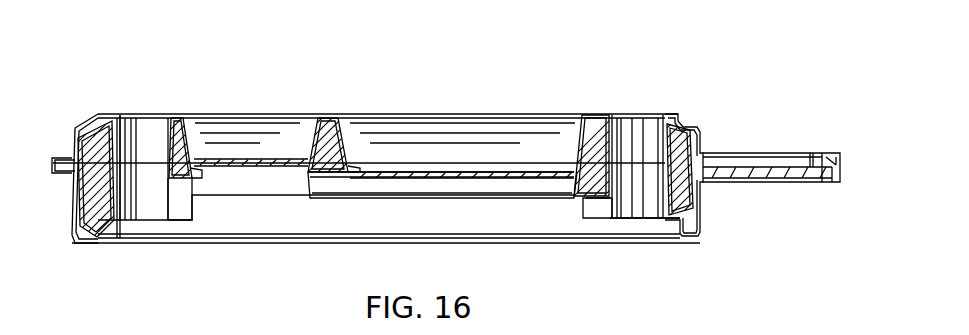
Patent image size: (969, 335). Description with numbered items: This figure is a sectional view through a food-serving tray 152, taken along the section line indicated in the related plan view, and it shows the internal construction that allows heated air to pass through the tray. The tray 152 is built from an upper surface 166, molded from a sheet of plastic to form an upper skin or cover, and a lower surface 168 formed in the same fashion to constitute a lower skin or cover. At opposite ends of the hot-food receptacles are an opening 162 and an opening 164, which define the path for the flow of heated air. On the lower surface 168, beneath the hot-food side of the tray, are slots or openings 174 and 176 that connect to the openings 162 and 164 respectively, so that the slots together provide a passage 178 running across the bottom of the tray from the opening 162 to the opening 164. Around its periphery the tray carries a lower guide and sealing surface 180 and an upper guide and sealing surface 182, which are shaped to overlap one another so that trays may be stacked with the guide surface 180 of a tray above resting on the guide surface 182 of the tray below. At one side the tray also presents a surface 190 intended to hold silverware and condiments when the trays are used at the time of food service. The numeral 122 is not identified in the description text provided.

The tray 152 is at (466, 98).
The piston 122 is at (318, 112).
The opening 162 is at (631, 122).
The opening 164 is at (148, 128).
The upper surface 166 is at (673, 112).
The lower surface 168 is at (703, 203).
The slot 174 is at (599, 213).
The slot 176 is at (177, 195).
The passage 178 is at (442, 225).
The lower guide and sealing surface 180 is at (83, 242).
The upper guide and sealing surface 182 is at (108, 110).
The surface 190 is at (758, 155).